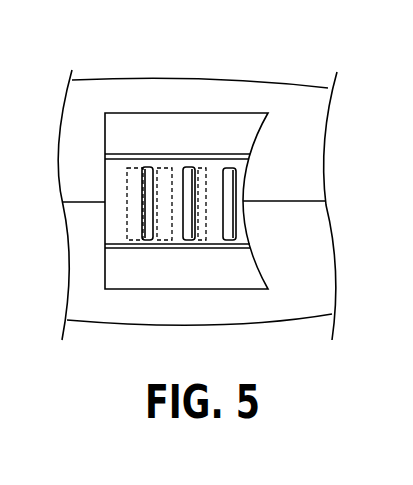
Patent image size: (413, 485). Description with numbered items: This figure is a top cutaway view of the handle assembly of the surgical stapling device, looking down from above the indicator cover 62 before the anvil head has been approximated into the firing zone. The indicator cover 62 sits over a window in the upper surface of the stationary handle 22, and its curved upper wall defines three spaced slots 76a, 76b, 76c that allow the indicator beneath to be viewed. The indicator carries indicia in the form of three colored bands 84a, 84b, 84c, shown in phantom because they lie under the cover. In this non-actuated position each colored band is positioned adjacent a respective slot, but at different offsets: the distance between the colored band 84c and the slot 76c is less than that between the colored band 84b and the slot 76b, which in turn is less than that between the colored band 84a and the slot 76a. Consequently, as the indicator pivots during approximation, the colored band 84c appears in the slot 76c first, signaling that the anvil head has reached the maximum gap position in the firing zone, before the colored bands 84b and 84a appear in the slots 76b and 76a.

The stationary handle 22 is at (148, 85).
The indicator cover 62 is at (126, 155).
The slot 76a is at (233, 193).
The slot 76b is at (185, 167).
The slot 76c is at (143, 228).
The colored band 84a is at (207, 170).
The colored band 84b is at (164, 240).
The colored band 84c is at (125, 205).